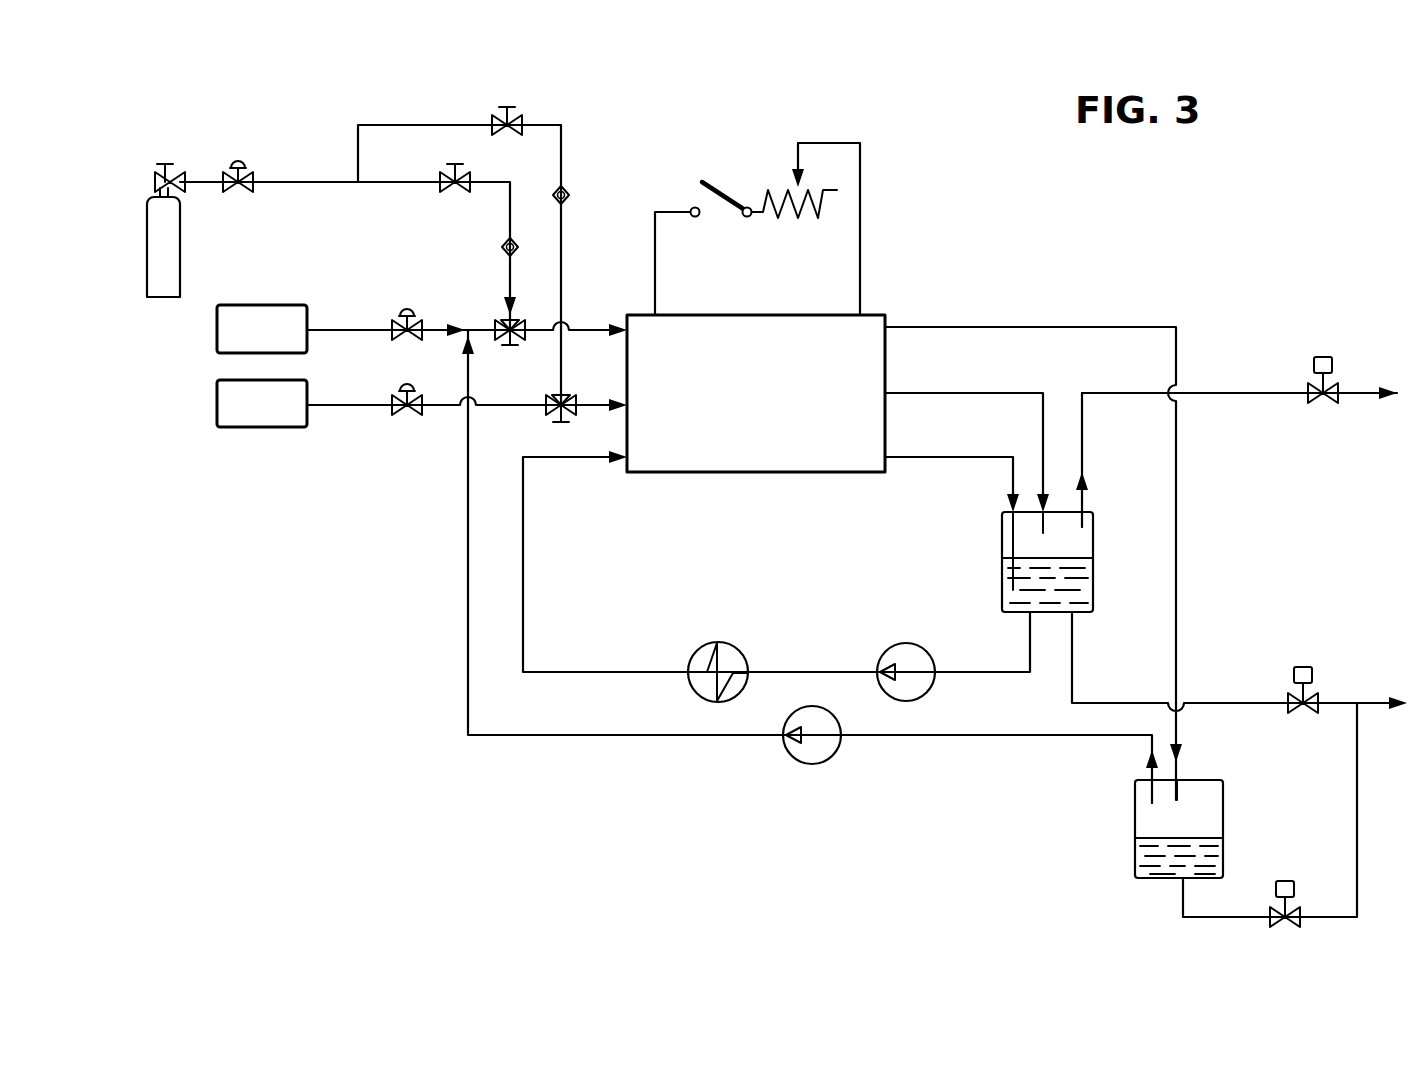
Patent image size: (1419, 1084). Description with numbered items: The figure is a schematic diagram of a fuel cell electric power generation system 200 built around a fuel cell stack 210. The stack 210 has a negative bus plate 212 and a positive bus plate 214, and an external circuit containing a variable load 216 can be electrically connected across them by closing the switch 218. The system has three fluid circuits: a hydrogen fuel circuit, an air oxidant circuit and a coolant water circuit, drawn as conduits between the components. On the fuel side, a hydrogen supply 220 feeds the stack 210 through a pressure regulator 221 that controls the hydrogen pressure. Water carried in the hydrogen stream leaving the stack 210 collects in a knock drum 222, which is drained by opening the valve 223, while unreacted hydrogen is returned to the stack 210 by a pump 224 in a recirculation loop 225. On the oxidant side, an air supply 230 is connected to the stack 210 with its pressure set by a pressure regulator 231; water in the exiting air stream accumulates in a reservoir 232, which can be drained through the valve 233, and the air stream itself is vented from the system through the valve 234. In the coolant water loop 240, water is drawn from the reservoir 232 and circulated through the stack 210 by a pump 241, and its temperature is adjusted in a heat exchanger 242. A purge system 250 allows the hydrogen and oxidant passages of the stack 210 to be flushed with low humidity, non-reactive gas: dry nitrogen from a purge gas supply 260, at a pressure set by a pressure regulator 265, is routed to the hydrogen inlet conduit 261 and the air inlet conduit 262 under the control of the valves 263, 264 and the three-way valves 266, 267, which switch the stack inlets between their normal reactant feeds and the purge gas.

The fuel cell electric power generation system 200 is at (1107, 265).
The fuel cell stack 210 is at (795, 462).
The negative bus plate 212 is at (862, 310).
The positive bus plate 214 is at (655, 310).
The variable load 216 is at (786, 215).
The switch 218 is at (722, 193).
The hydrogen supply 220 is at (217, 330).
The pressure regulator 221 is at (409, 298).
The knock drum 222 is at (1136, 855).
The valve 223 is at (1292, 912).
The pump 224 is at (818, 765).
The recirculation loop 225 is at (625, 737).
The air supply 230 is at (217, 405).
The pressure regulator 231 is at (409, 410).
The reservoir 232 is at (1093, 575).
The valve 233 is at (1292, 680).
The valve 234 is at (1312, 362).
The coolant water loop 240 is at (827, 634).
The pump 241 is at (950, 612).
The heat exchanger 242 is at (763, 612).
The purge system 250 is at (322, 145).
The purge gas supply 260 is at (180, 235).
The hydrogen inlet conduit 261 is at (587, 327).
The air inlet conduit 262 is at (590, 404).
The valve 263 is at (452, 165).
The valve 264 is at (515, 101).
The pressure regulator 265 is at (240, 163).
The three-way valve 266 is at (548, 410).
The three-way valve 267 is at (505, 322).